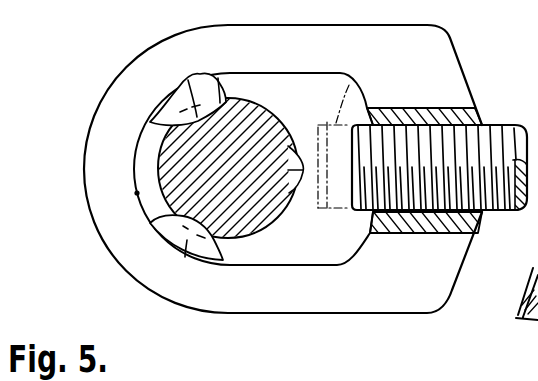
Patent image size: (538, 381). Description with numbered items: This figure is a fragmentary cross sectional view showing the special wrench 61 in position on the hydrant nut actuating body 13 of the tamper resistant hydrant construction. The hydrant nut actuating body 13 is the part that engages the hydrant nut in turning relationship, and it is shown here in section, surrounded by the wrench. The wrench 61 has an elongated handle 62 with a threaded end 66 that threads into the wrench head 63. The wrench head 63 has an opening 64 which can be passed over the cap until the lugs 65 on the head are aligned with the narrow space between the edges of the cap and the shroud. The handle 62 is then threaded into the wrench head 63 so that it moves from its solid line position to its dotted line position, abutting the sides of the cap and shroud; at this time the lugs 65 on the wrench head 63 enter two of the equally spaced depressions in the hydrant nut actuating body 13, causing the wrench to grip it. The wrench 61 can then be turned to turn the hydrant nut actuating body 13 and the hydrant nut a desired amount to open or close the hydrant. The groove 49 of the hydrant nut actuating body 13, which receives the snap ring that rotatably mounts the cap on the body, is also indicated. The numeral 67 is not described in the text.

The hydrant nut actuating body 13 is at (160, 173).
The groove 49 is at (205, 0).
The special wrench 61 is at (450, 38).
The elongated handle 62 is at (505, 125).
The wrench head 63 is at (120, 76).
The opening 64 is at (303, 75).
The lugs 65 is at (243, 75).
The threaded end 66 is at (397, 108).
The gap 67 is at (137, 193).